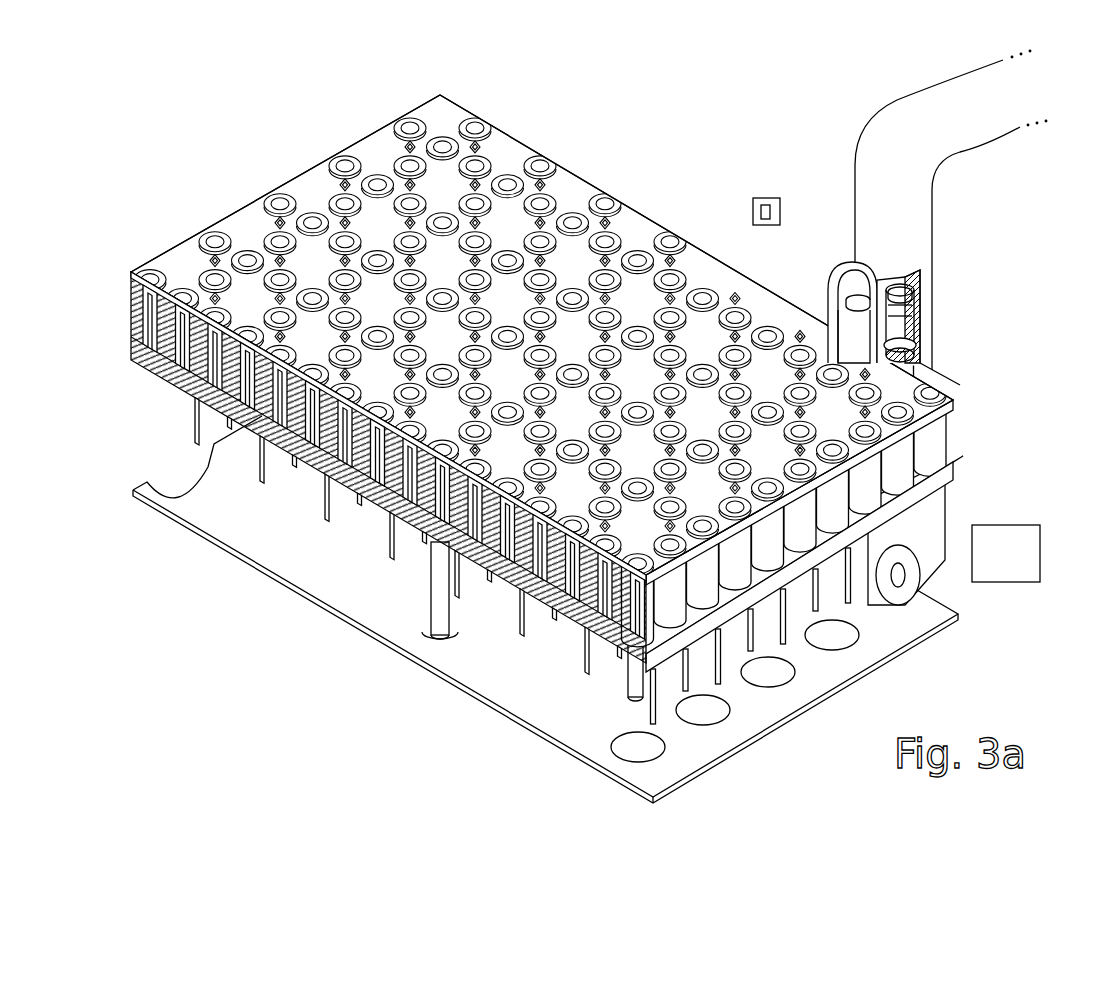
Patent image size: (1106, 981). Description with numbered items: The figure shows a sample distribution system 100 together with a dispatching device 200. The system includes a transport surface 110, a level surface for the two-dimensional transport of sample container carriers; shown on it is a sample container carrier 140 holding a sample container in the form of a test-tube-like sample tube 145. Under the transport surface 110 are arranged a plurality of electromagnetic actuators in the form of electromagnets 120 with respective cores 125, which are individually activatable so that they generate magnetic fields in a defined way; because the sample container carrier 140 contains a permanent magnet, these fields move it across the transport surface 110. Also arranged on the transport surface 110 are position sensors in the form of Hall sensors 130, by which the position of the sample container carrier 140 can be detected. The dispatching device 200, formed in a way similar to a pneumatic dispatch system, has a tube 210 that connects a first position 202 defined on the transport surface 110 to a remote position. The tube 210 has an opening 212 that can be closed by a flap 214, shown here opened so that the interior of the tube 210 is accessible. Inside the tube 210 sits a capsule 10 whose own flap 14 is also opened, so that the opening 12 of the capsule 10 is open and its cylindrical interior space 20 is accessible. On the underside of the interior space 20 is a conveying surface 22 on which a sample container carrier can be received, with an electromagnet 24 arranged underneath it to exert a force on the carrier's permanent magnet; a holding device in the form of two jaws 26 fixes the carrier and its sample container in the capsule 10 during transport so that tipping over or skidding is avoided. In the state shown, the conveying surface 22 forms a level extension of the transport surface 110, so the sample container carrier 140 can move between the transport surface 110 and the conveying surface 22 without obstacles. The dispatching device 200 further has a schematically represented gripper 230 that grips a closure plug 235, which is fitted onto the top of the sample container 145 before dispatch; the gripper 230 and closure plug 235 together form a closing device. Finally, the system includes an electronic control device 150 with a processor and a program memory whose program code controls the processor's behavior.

The sample distribution system 100 is at (240, 597).
The transport surface 110 is at (243, 223).
The electromagnet 120 is at (623, 592).
The core 125 is at (618, 602).
The Hall sensor 130 is at (470, 224).
The sample container carrier 140 is at (790, 410).
The sample tube 145 is at (770, 375).
The electronic control device 150 is at (988, 566).
The dispatching device 200 is at (800, 98).
The tube 210 is at (998, 118).
The opening 212 is at (898, 272).
The flap 214 is at (836, 300).
The flap 14 is at (848, 322).
The capsule 10 is at (915, 290).
The opening 12 is at (905, 316).
The interior space 20 is at (905, 307).
The conveying surface 22 is at (905, 345).
The electromagnet 24 is at (905, 332).
The jaws 26 is at (858, 296).
The first position 202 is at (945, 362).
The gripper 230 is at (768, 198).
The closure plug 235 is at (753, 212).